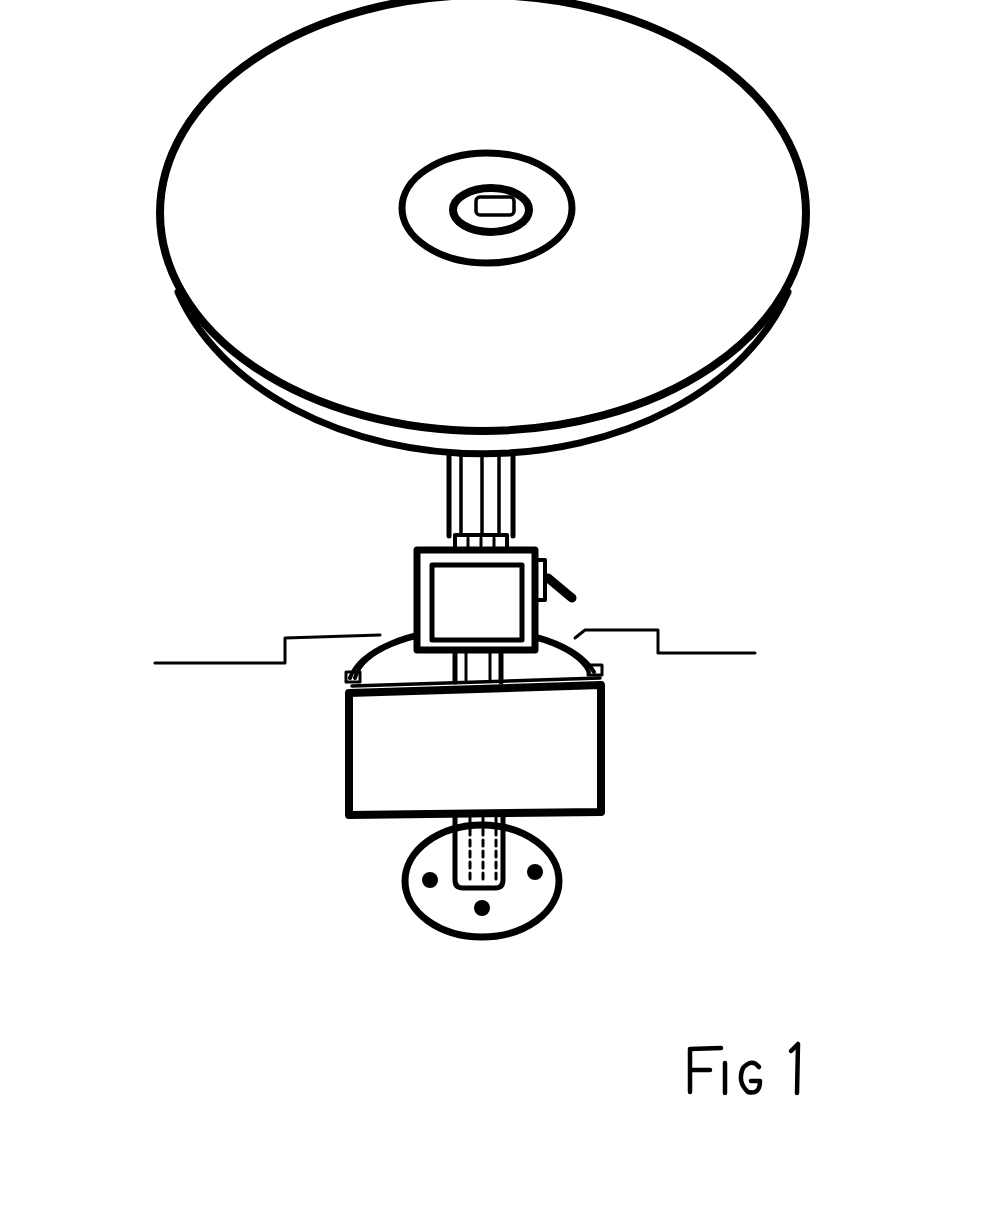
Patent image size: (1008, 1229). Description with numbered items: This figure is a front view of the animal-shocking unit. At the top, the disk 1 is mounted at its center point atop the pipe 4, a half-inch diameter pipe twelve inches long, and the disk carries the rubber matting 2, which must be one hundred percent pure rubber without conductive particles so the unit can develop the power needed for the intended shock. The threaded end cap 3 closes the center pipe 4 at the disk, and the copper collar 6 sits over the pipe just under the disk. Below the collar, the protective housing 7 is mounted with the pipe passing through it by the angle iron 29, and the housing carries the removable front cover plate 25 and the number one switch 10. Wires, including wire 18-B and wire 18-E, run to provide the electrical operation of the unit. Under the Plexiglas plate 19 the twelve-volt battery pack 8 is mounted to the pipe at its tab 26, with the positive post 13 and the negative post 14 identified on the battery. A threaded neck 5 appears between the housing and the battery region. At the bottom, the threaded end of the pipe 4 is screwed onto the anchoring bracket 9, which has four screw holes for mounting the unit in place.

The disk 1 is at (660, 152).
The rubber matting 2 is at (572, 222).
The threaded end cap 3 is at (462, 202).
The pipe 4 is at (523, 830).
The threaded neck 5 is at (478, 667).
The copper collar 6 is at (515, 477).
The protective housing 7 is at (536, 608).
The battery pack 8 is at (551, 730).
The anchoring bracket 9 is at (522, 894).
The switch 10 is at (548, 572).
The positive post 13 is at (602, 671).
The negative post 14 is at (346, 678).
The wire 18-B is at (246, 654).
The wire 18-E is at (687, 647).
The Plexiglas plate 19 is at (358, 690).
The removable front cover plate 25 is at (473, 598).
The tab 26 is at (452, 670).
The angle iron 29 is at (503, 660).